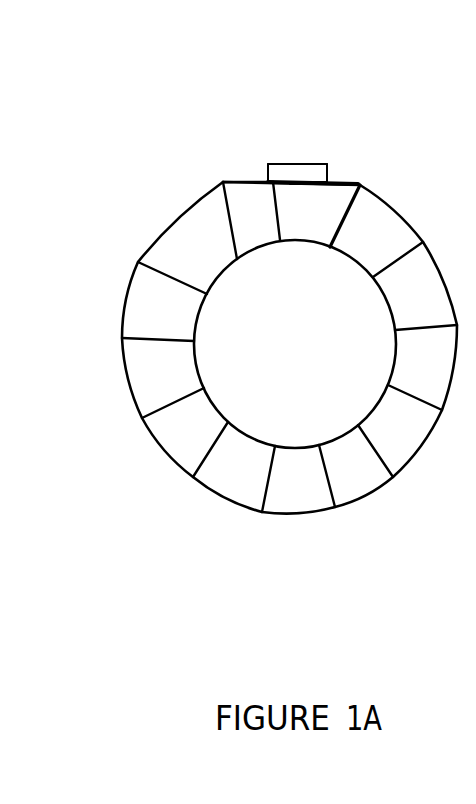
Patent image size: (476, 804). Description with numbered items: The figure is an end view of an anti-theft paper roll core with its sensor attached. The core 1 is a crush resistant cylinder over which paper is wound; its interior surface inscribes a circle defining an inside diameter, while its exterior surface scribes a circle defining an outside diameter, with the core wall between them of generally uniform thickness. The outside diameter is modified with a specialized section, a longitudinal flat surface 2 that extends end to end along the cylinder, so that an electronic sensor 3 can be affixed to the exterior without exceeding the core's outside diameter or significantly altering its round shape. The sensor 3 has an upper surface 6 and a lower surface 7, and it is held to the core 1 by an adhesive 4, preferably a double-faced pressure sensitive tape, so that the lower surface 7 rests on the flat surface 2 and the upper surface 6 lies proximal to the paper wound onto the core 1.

The core 1 is at (289, 332).
The flat surface 2 is at (223, 153).
The sensor 3 is at (363, 124).
The adhesive 4 is at (354, 165).
The upper surface 6 is at (315, 115).
The lower surface 7 is at (321, 251).